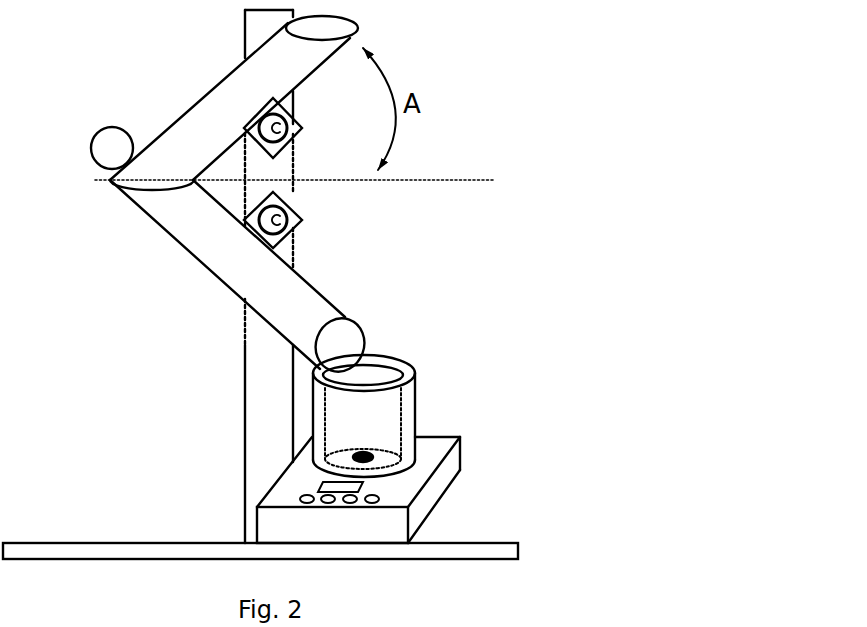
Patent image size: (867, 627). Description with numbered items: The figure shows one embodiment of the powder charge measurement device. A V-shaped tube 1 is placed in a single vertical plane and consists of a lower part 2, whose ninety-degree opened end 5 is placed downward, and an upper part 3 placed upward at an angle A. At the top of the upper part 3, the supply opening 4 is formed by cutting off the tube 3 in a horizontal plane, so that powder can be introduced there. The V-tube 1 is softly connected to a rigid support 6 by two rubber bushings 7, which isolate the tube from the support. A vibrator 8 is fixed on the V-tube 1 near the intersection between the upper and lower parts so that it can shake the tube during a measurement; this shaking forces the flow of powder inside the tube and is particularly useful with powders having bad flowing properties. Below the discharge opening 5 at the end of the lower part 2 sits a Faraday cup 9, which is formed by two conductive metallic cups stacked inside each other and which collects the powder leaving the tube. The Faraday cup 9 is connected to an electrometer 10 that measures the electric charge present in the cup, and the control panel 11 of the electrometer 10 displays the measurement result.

The V-shaped tube 1 is at (141, 192).
The lower part 2 is at (232, 258).
The upper part 3 is at (224, 109).
The supply opening 4 is at (334, 25).
The discharge opening 5 is at (343, 342).
The rigid support 6 is at (267, 372).
The rubber bushings 7 is at (283, 214).
The vibrator 8 is at (110, 146).
The Faraday cup 9 is at (385, 432).
The electrometer 10 is at (433, 438).
The control panel 11 is at (362, 487).